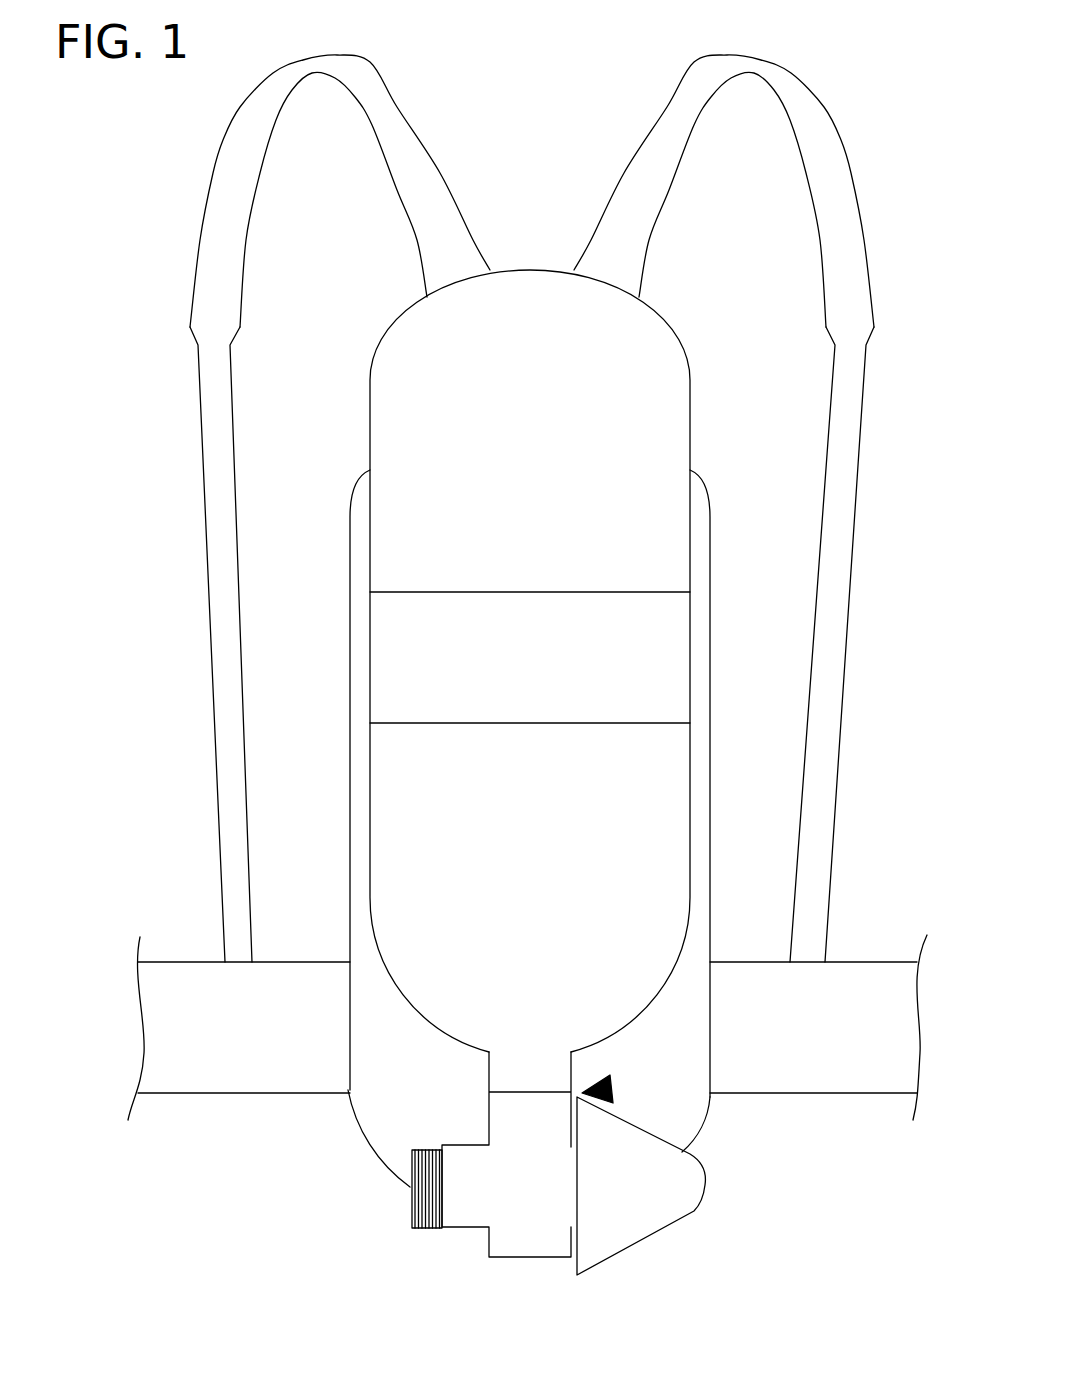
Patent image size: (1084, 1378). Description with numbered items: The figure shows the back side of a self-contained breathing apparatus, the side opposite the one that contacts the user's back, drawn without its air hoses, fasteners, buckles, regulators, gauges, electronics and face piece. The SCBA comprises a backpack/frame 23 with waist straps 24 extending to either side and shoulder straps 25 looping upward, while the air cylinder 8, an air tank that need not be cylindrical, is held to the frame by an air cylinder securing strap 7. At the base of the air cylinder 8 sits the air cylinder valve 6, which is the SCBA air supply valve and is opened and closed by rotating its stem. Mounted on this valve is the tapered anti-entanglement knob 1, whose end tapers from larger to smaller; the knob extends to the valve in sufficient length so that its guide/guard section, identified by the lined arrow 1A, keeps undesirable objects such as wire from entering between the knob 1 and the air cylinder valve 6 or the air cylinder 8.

The tapered anti-entanglement knob 1 is at (627, 1198).
The guide/guard 1A is at (612, 1090).
The air cylinder valve 6 is at (537, 1178).
The air cylinder securing strap 7 is at (470, 637).
The air cylinder 8 is at (515, 445).
The backpack/frame 23 is at (392, 1112).
The waist straps 24 is at (178, 1023).
The shoulder straps 25 is at (220, 303).